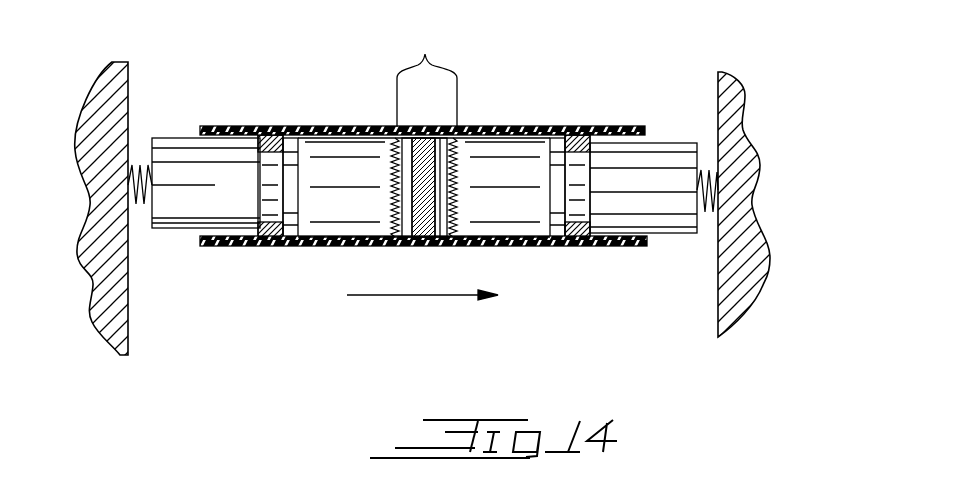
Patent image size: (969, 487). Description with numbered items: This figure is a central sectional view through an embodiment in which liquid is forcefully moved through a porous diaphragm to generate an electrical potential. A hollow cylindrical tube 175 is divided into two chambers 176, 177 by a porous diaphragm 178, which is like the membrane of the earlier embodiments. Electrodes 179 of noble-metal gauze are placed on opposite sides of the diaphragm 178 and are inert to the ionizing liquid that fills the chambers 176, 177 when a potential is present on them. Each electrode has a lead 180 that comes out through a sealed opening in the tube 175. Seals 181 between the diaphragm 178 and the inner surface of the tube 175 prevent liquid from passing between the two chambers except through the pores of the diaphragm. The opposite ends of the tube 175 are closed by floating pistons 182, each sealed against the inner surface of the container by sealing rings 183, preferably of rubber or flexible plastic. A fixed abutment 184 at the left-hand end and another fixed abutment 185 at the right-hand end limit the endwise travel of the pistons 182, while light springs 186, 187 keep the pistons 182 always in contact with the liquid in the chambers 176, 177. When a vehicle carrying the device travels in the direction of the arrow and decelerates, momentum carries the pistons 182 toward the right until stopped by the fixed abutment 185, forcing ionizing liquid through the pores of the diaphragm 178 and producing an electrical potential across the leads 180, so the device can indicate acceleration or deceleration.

The hollow cylindrical tube 175 is at (335, 126).
The chamber 176 is at (345, 182).
The chamber 177 is at (505, 182).
The porous diaphragm 178 is at (428, 154).
The electrodes 179 is at (393, 200).
The lead 180 is at (427, 83).
The seals 181 is at (430, 247).
The floating pistons 182 is at (205, 155).
The sealing rings 183 is at (265, 135).
The fixed abutment 184 is at (165, 70).
The fixed abutment 185 is at (745, 90).
The light spring 186 is at (135, 190).
The light spring 187 is at (718, 186).